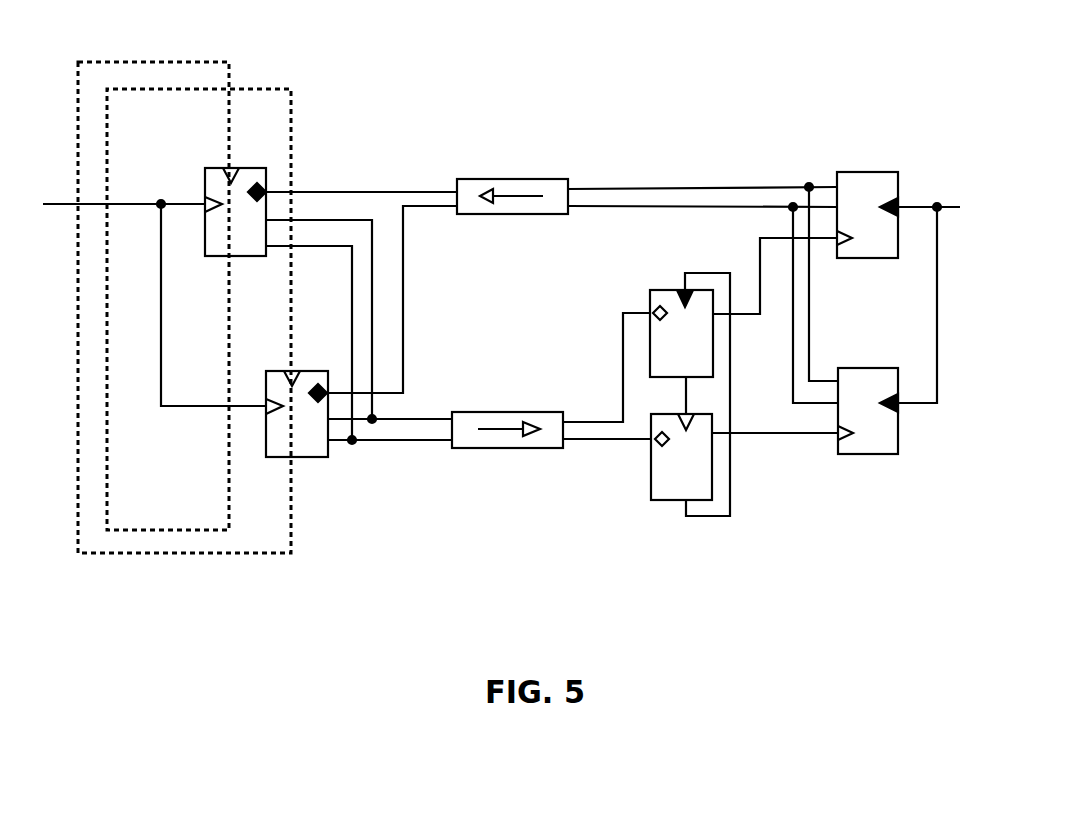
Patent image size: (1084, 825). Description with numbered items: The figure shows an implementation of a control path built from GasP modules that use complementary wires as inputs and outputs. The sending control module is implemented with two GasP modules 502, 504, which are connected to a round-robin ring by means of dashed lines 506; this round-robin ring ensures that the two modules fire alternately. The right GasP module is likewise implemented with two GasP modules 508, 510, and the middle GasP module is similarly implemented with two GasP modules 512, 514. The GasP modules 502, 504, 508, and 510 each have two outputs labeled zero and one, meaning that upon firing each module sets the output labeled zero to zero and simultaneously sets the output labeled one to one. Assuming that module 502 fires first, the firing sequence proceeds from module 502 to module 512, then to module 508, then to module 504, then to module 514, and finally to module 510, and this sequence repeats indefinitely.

The GasP module 502 is at (248, 168).
The GasP module 504 is at (328, 458).
The dashed lines 506 is at (227, 62).
The GasP module 508 is at (870, 172).
The GasP module 510 is at (893, 457).
The GasP module 512 is at (652, 290).
The GasP module 514 is at (677, 502).